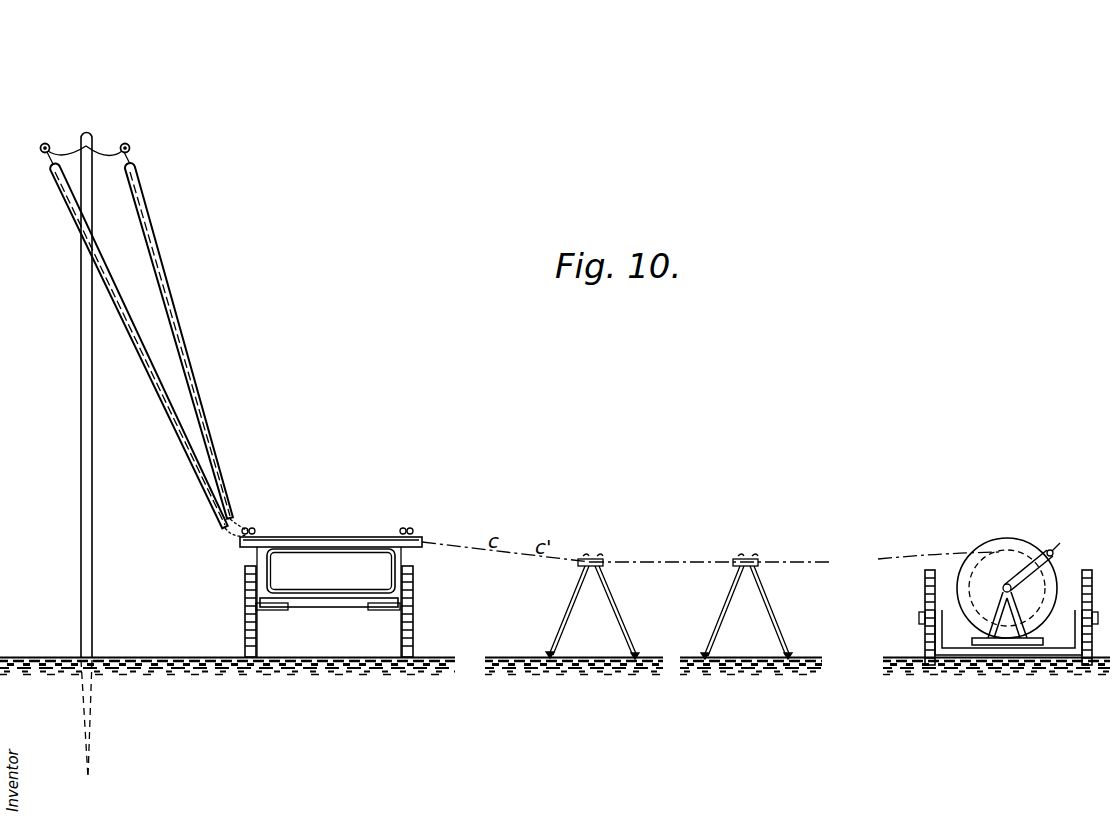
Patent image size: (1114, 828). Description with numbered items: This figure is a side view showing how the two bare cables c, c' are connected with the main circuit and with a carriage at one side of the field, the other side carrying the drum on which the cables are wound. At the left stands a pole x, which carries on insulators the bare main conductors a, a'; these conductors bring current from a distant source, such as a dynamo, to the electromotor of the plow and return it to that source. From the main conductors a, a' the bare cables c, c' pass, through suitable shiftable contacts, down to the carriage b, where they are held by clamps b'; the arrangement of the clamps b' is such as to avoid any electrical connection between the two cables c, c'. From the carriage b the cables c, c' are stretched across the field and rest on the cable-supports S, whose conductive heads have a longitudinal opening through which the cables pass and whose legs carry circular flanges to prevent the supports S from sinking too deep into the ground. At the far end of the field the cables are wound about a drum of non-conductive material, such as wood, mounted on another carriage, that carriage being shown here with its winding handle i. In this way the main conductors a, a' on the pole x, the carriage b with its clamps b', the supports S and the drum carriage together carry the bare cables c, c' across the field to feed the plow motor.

The bare main conductor a is at (52, 142).
The bare main conductor a' is at (133, 142).
The bare cable c is at (148, 350).
The bare cable c' is at (186, 347).
The pole x is at (95, 456).
The carriage b is at (331, 597).
The clamp b' is at (333, 521).
The cable-support S is at (669, 606).
The reel crank i is at (1011, 587).